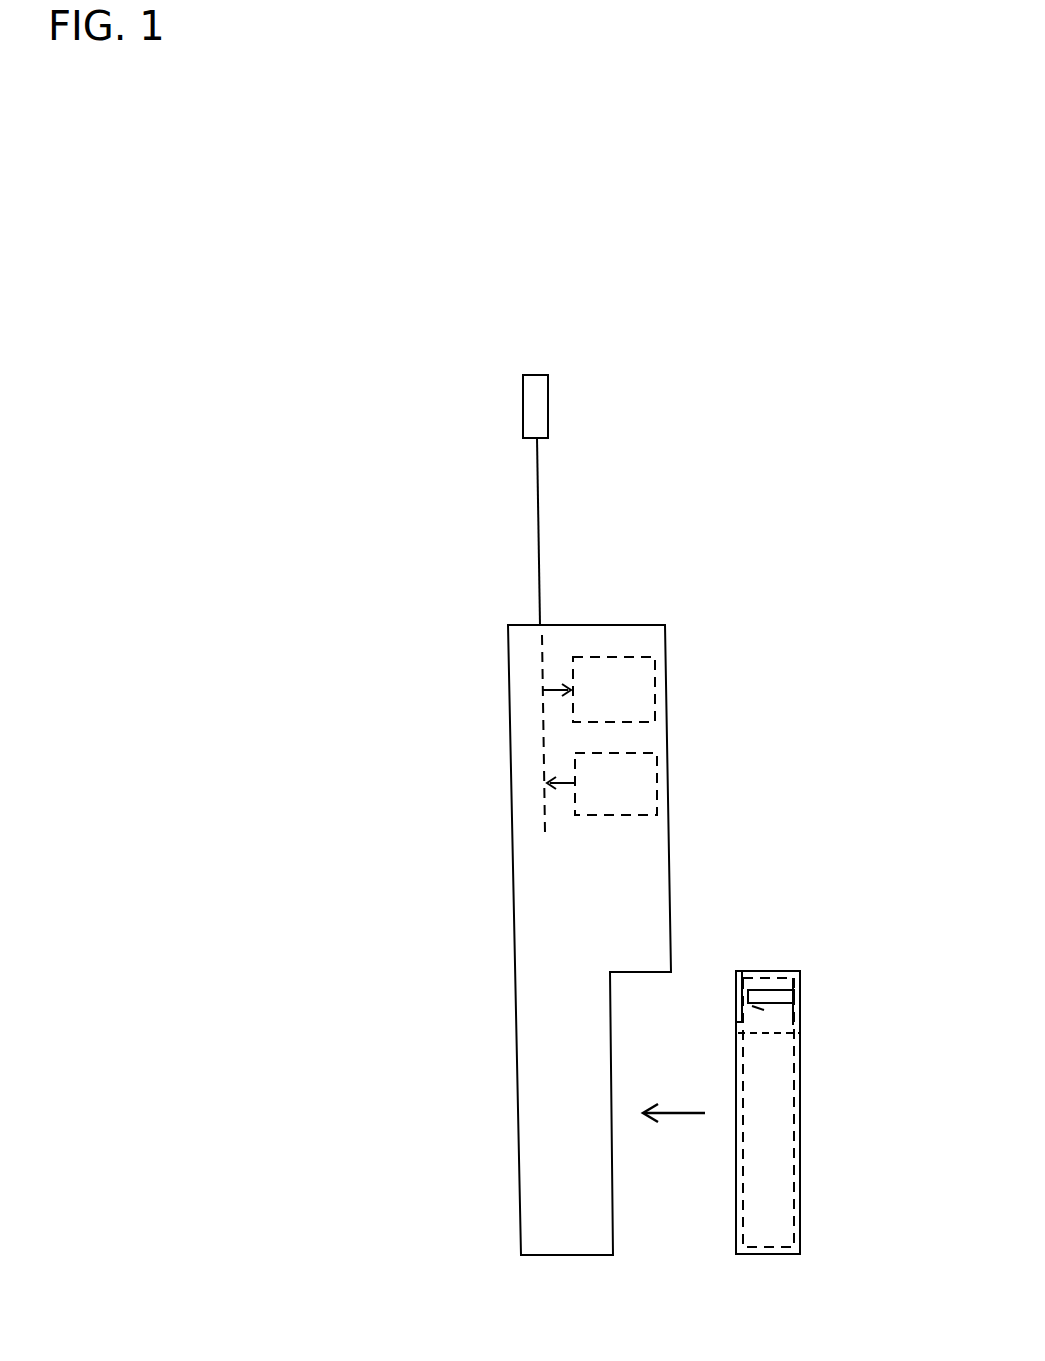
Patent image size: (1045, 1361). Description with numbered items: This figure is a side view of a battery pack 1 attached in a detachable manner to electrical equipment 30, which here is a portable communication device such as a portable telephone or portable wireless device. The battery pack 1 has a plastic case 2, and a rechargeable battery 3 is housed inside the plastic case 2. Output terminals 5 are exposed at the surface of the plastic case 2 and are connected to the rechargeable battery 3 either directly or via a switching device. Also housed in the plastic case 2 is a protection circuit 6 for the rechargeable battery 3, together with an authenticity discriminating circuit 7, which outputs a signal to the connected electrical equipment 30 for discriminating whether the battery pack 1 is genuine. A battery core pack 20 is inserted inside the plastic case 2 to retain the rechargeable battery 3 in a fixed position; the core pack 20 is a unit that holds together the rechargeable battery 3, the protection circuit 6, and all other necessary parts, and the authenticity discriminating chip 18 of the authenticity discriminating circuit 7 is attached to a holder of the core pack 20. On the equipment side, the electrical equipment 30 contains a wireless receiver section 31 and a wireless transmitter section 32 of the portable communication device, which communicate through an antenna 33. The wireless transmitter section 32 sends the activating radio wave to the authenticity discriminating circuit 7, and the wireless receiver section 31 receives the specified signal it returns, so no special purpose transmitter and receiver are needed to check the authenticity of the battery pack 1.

The battery pack 1 is at (792, 1073).
The plastic case 2 is at (800, 1213).
The rechargeable battery 3 is at (797, 1153).
The output terminals 5 is at (735, 1003).
The protection circuit 6 is at (782, 975).
The authenticity discriminating circuit 7 is at (762, 1006).
The authenticity discriminating chip 18 is at (787, 985).
The battery core pack 20 is at (800, 1033).
The electrical equipment 30 is at (497, 806).
The wireless receiver section 31 is at (658, 688).
The wireless transmitter section 32 is at (660, 782).
The antenna 33 is at (540, 522).